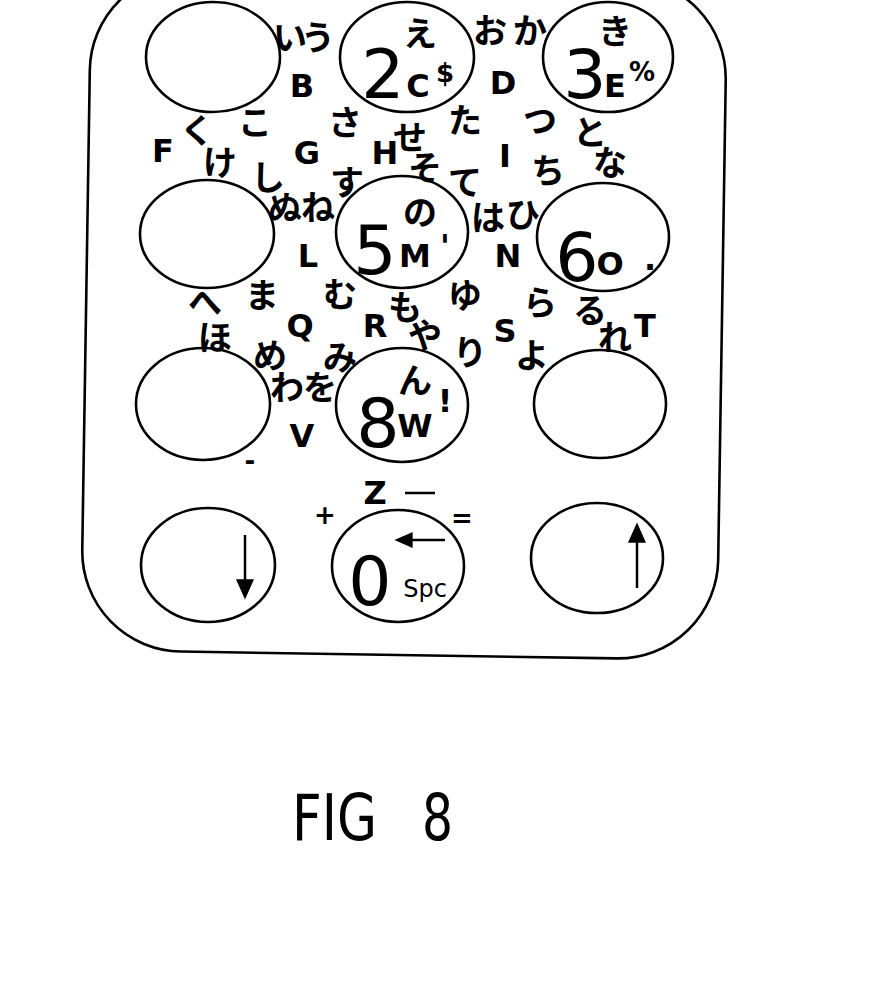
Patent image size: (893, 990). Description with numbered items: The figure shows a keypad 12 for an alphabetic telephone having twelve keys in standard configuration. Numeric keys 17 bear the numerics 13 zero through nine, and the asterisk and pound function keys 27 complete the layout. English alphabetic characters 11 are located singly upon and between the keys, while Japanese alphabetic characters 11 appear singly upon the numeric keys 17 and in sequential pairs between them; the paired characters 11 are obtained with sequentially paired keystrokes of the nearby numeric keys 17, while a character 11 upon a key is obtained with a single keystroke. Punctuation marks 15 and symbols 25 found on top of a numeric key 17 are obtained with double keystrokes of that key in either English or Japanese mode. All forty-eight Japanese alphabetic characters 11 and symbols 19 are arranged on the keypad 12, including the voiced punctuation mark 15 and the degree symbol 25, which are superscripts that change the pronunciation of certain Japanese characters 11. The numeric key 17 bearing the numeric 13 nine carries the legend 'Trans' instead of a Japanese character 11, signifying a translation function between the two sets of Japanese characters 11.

The alphabetic characters 11 is at (200, 370).
The keypad 12 is at (705, 498).
The numerics 13 is at (175, 433).
The punctuation marks 15 is at (660, 410).
The numeric keys 17 is at (160, 90).
The symbols 19 is at (650, 570).
The degree symbol 25 is at (527, 450).
The function keys 27 is at (157, 605).